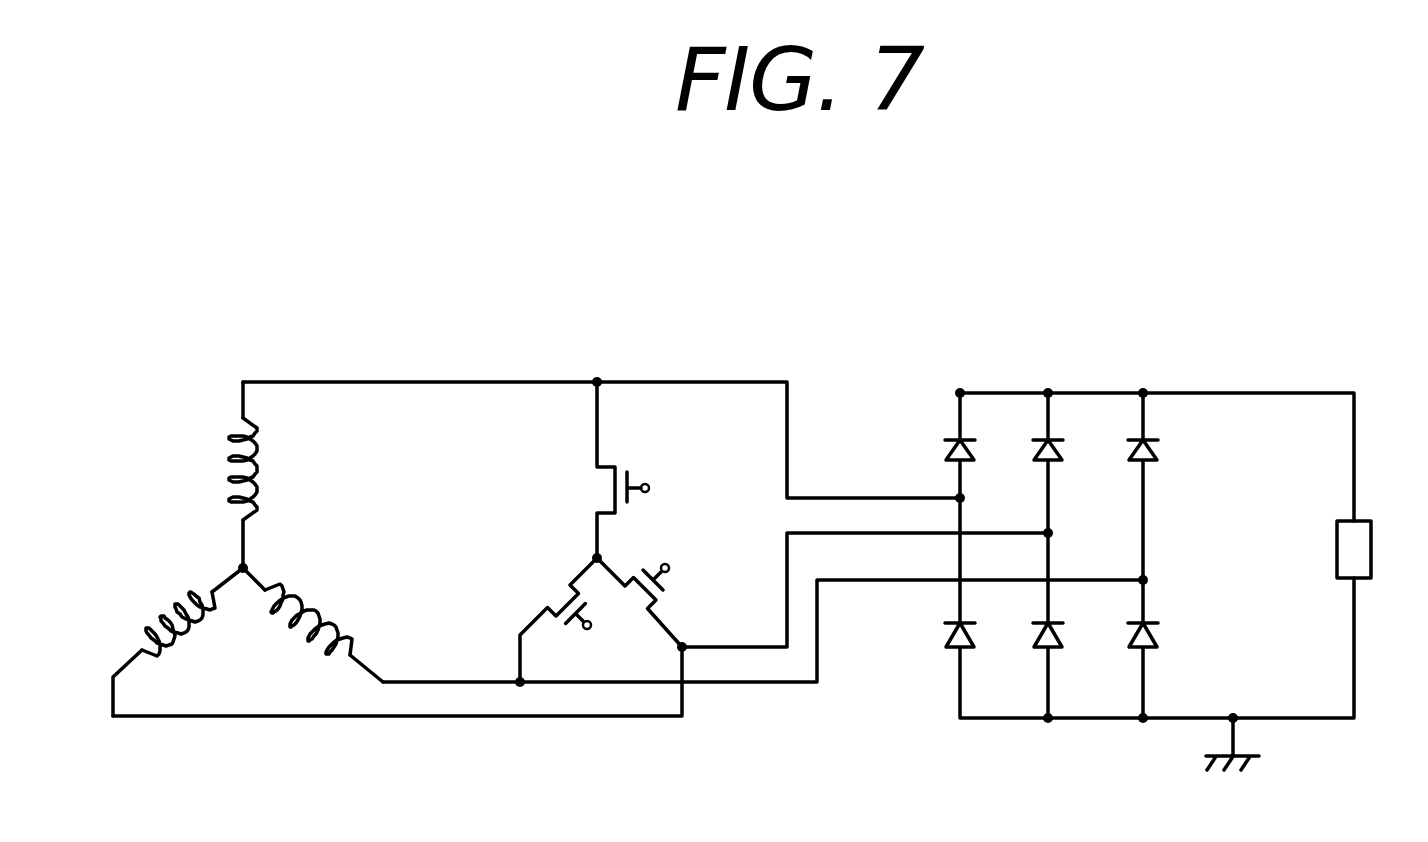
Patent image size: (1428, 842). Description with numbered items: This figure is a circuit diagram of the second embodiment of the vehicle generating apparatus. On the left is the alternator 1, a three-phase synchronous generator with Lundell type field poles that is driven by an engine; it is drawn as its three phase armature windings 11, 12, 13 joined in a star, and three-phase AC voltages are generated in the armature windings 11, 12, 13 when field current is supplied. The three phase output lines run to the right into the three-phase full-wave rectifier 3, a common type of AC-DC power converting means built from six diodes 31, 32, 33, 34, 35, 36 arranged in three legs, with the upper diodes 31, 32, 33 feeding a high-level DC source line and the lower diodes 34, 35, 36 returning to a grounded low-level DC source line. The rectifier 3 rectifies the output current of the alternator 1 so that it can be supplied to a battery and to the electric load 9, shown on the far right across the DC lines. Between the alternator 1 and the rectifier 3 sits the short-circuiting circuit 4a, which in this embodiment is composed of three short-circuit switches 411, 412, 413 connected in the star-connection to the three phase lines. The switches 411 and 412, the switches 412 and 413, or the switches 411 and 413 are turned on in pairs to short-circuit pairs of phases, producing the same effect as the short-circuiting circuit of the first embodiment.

The alternator 1 is at (188, 487).
The armature winding 11 is at (262, 465).
The armature winding 12 is at (308, 602).
The armature winding 13 is at (180, 600).
The short-circuiting circuit 4a is at (533, 523).
The short-circuit switch 411 is at (600, 483).
The short-circuit switch 412 is at (567, 597).
The short-circuit switch 413 is at (640, 600).
The three-phase full-wave rectifier 3 is at (1070, 370).
The diode 31 is at (940, 440).
The diode 32 is at (1038, 462).
The diode 33 is at (1131, 454).
The diode 34 is at (935, 633).
The diode 35 is at (1030, 635).
The diode 36 is at (1129, 640).
The electric load 9 is at (1364, 503).